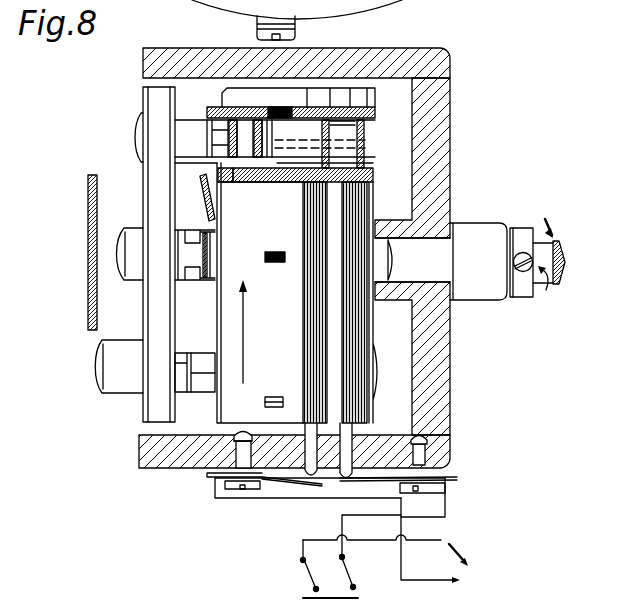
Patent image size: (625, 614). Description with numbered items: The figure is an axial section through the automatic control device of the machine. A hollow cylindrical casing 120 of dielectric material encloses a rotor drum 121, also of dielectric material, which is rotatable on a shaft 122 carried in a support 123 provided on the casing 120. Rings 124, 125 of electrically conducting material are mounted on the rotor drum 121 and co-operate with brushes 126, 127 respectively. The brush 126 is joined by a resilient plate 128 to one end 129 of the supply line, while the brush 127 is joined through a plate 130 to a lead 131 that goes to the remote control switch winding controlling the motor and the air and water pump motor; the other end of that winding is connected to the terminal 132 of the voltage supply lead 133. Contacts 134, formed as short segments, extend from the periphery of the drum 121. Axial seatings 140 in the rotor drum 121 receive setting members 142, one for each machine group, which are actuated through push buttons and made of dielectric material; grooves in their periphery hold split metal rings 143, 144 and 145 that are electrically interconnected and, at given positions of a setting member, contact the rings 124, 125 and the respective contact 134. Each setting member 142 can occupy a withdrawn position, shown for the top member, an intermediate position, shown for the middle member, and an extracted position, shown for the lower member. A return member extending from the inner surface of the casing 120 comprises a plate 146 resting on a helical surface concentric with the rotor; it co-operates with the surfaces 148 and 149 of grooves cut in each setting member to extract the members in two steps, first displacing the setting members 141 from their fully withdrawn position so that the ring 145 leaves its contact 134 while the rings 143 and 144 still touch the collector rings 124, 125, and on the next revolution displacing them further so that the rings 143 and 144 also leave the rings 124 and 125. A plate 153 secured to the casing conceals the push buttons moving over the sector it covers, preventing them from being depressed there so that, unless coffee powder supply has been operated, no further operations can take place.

The hollow cylindrical casing 120 is at (405, 60).
The rotor drum 121 is at (203, 463).
The shaft 122 is at (452, 223).
The support 123 is at (450, 297).
The ring 124 is at (374, 357).
The ring 125 is at (312, 360).
The brush 126 is at (345, 472).
The brush 127 is at (307, 477).
The resilient plate 128 is at (445, 492).
The end of the supply line 129 is at (347, 575).
The plate 130 is at (263, 482).
The lead 131 is at (425, 580).
The terminal 132 is at (308, 580).
The voltage supply lead 133 is at (442, 540).
The contacts 134 is at (283, 108).
The axial seatings 140 is at (341, 127).
The setting members 141 is at (403, 158).
The setting member 142 is at (136, 141).
The split metal ring 143 is at (366, 158).
The split metal ring 144 is at (302, 172).
The split metal ring 145 is at (260, 172).
The plate 146 is at (209, 207).
The surface 148 is at (236, 168).
The surface 149 is at (215, 112).
The plate 153 is at (90, 270).